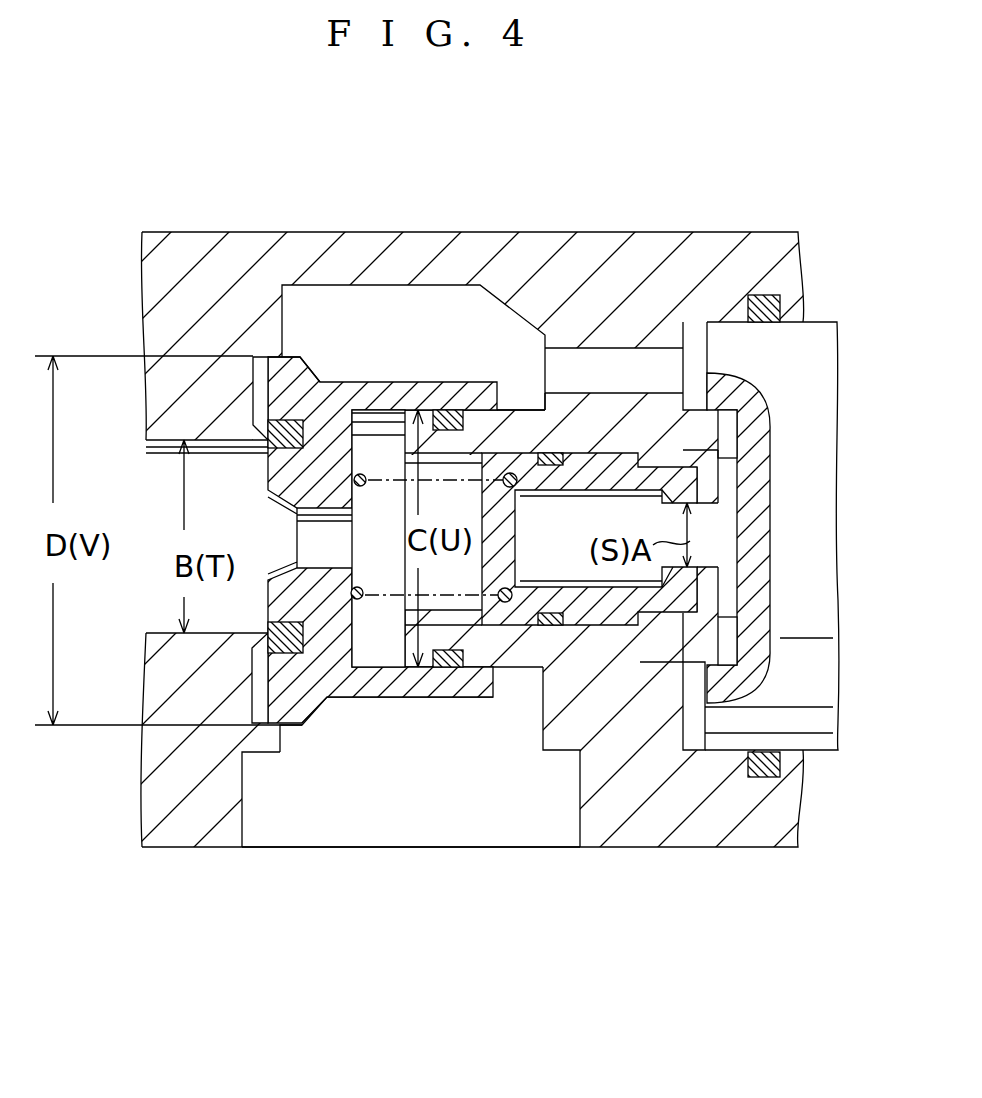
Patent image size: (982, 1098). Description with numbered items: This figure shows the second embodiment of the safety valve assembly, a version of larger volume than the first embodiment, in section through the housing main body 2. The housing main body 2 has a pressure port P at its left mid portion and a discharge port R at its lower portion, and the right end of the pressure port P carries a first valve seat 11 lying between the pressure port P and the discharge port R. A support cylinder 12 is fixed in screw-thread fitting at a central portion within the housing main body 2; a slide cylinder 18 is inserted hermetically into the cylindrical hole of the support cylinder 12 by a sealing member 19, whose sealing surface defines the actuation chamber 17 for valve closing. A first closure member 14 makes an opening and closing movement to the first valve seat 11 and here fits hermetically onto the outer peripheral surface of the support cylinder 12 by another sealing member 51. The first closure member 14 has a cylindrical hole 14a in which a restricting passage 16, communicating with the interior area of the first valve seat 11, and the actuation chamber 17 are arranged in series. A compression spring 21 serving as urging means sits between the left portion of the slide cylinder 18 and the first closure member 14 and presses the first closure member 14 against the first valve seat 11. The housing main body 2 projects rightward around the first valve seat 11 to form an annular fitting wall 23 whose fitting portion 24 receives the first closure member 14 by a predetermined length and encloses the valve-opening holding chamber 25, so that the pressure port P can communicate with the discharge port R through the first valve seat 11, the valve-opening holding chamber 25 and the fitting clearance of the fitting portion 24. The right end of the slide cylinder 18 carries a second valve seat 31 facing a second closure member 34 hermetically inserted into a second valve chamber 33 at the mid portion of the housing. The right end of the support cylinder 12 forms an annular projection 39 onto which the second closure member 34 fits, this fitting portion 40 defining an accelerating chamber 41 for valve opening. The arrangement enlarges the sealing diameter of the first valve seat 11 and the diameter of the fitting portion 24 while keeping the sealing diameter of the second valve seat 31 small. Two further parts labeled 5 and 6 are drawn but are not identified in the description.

The housing main body 2 is at (627, 858).
The cylinder block 5 is at (458, 314).
The valve body 6 is at (834, 268).
The first valve seat 11 is at (253, 435).
The support cylinder 12 is at (520, 389).
The first closure member 14 is at (379, 710).
The cylindrical hole 14a is at (386, 666).
The restricting passage 16 is at (323, 520).
The actuation chamber for valve closing 17 is at (382, 445).
The slide cylinder 18 is at (518, 627).
The sealing member 19 is at (547, 466).
The compression spring 21 is at (362, 668).
The annular fitting wall 23 is at (258, 356).
The fitting portion 24 is at (282, 347).
The valve-opening holding chamber 25 is at (268, 340).
The second valve seat 31 is at (700, 567).
The second valve chamber 33 is at (707, 356).
The second closure member 34 is at (730, 307).
The annular projection 39 is at (724, 433).
The fitting portion 40 is at (735, 385).
The accelerating chamber for valve opening 41 is at (728, 447).
The sealing member 51 is at (448, 411).
The pressure port P is at (152, 605).
The discharge port R is at (426, 838).